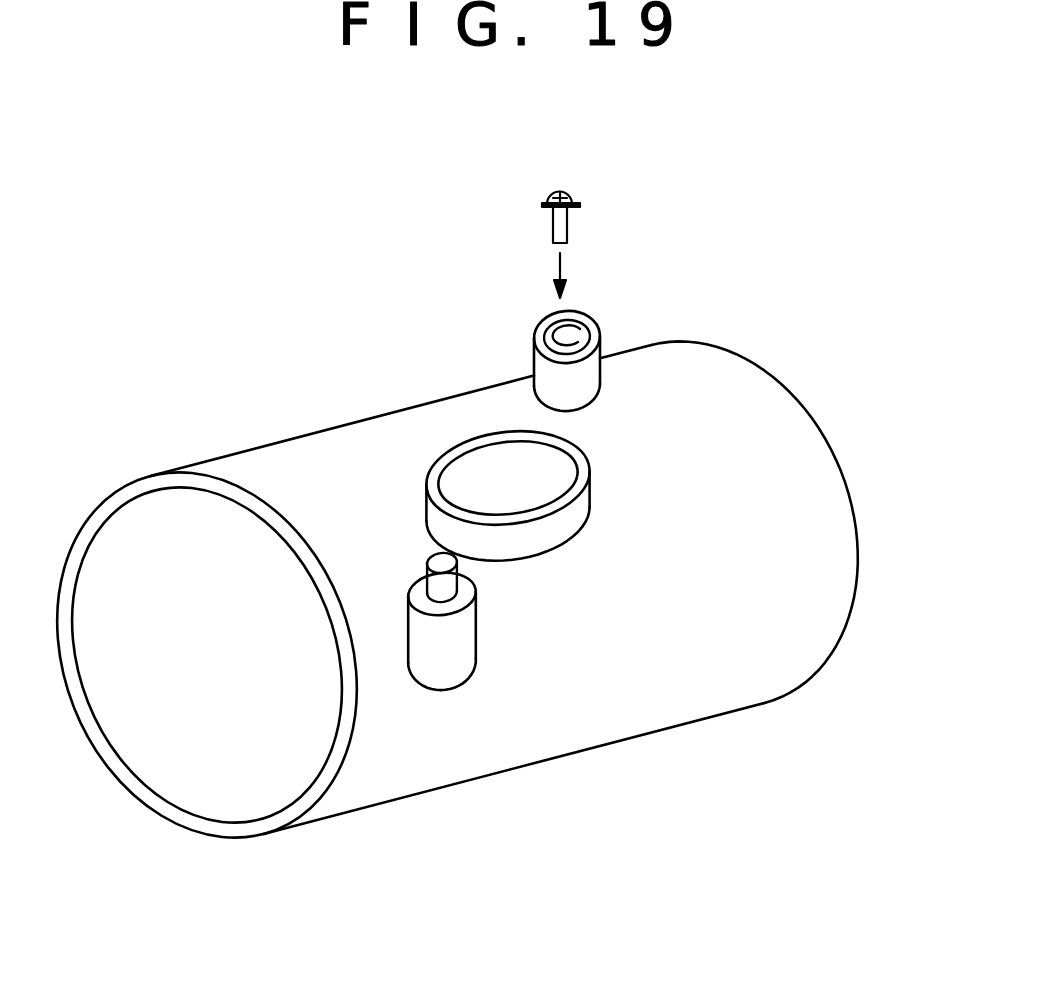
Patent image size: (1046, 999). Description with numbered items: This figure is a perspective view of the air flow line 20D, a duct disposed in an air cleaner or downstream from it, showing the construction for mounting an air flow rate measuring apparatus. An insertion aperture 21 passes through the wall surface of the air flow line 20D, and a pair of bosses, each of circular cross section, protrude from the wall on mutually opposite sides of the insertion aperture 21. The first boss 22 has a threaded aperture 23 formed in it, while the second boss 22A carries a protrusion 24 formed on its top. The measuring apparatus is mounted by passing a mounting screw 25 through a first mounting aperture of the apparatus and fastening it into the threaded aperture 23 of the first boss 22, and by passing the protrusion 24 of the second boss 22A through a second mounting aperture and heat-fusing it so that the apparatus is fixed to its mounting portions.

The air flow line 20D is at (284, 438).
The insertion aperture 21 is at (463, 447).
The first boss 22 is at (607, 340).
The second boss 22A is at (455, 658).
The threaded aperture 23 is at (572, 330).
The protrusion 24 is at (450, 575).
The mounting screw 25 is at (580, 215).